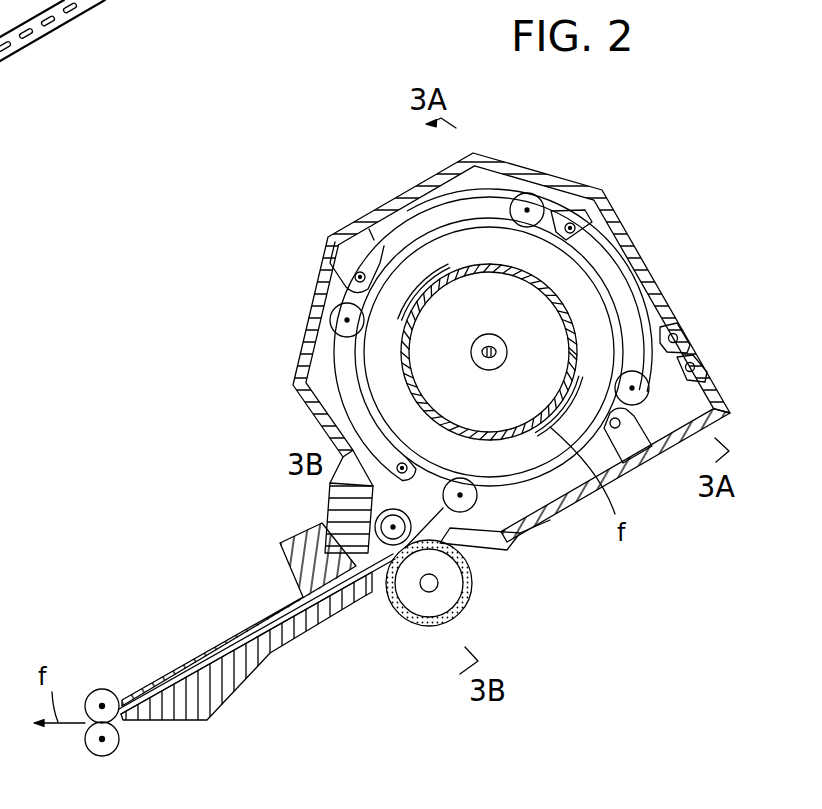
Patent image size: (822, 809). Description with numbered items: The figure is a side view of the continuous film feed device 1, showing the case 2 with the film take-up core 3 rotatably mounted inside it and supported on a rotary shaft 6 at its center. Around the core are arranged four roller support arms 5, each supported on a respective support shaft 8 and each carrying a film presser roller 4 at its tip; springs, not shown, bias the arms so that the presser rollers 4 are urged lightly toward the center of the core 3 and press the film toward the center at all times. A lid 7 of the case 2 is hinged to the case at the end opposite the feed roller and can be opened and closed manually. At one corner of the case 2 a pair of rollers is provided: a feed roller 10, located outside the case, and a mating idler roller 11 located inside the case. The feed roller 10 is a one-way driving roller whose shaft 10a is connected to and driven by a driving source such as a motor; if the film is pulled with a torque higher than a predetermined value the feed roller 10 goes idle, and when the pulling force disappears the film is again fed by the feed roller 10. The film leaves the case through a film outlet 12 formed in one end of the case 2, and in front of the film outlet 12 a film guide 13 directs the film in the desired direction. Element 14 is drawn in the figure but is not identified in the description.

The continuous film feed device 1 is at (306, 230).
The case 2 is at (440, 173).
The film take-up core 3 is at (565, 305).
The film presser roller 4 is at (464, 510).
The roller support arm 5 is at (487, 196).
The rotary shaft 6 is at (485, 345).
The lid 7 is at (622, 480).
The support shaft 8 is at (357, 272).
The feed roller 10 is at (472, 580).
The shaft 10a is at (436, 586).
The idler roller 11 is at (348, 525).
The film outlet 12 is at (341, 552).
The film guide 13 is at (288, 632).
The tape 14 is at (340, 600).